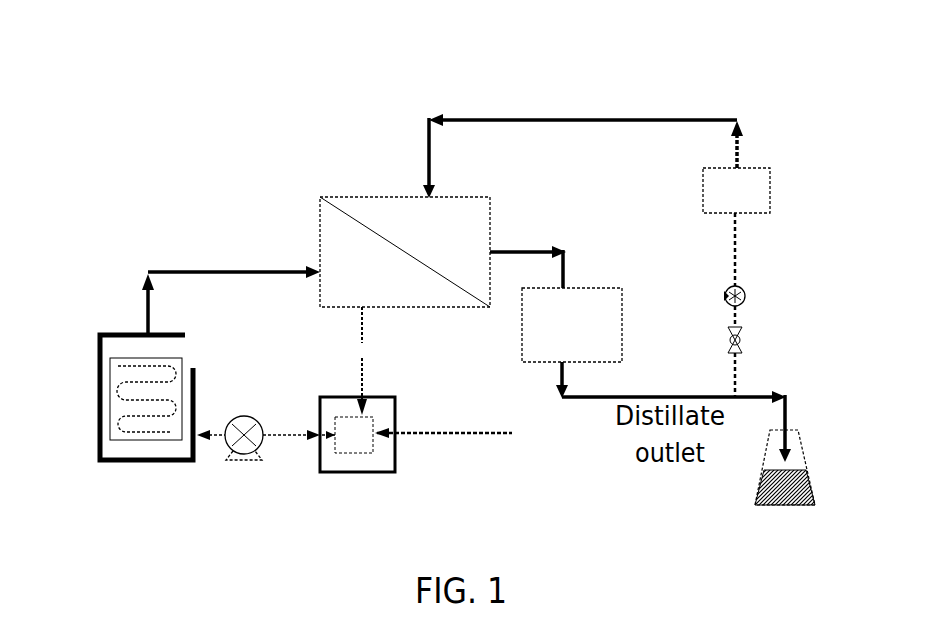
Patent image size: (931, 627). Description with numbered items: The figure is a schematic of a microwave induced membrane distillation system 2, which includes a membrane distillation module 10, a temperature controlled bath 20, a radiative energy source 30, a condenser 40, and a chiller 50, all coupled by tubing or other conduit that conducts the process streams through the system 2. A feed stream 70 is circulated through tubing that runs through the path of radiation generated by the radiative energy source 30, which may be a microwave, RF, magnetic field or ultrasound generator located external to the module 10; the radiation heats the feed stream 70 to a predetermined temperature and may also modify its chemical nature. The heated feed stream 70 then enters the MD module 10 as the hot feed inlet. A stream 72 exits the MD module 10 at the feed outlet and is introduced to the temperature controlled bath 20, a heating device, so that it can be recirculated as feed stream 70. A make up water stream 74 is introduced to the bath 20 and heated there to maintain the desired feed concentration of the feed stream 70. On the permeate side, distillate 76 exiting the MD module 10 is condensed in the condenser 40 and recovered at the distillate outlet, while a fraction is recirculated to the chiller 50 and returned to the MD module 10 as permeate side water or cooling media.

The microwave induced membrane distillation system 2 is at (224, 80).
The membrane distillation module 10 is at (372, 197).
The temperature controlled bath 20 is at (375, 462).
The radiative energy source 30 is at (107, 342).
The condenser 40 is at (588, 343).
The chiller 50 is at (757, 168).
The feed stream 70 is at (308, 430).
The stream exiting MD module 72 is at (362, 343).
The make up water stream 74 is at (415, 432).
The distillate 76 is at (562, 268).